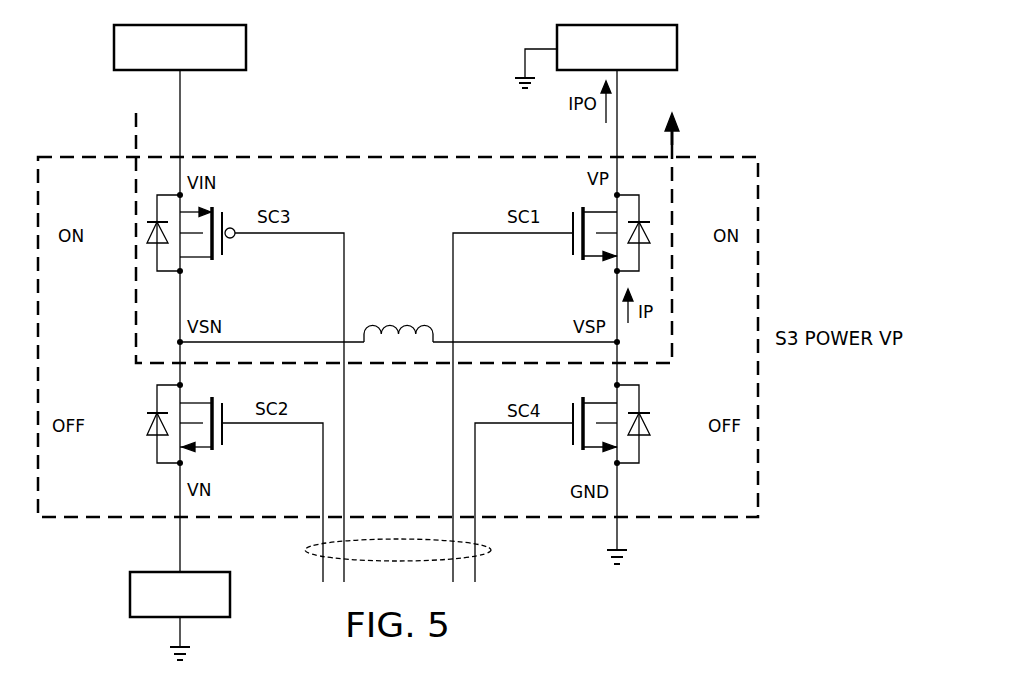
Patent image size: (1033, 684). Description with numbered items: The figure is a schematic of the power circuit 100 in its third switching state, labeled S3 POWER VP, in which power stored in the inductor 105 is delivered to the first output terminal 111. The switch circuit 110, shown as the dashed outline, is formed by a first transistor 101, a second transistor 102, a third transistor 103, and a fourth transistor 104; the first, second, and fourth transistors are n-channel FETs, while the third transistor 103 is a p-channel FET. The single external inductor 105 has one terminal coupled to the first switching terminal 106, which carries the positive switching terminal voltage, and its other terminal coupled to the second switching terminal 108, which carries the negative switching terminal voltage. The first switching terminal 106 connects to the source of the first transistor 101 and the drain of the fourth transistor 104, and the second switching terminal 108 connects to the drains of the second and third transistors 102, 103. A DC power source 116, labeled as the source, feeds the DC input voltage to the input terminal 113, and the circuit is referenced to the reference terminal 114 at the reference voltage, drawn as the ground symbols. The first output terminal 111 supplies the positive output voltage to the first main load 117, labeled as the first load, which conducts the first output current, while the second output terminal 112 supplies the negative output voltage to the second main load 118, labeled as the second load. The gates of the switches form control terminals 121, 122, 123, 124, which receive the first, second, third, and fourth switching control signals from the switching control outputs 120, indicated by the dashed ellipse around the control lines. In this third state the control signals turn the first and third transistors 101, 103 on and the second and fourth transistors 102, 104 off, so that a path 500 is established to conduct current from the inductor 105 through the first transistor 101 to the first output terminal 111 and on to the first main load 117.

The power circuit 100 is at (826, 250).
The first transistor 101 is at (573, 245).
The second transistor 102 is at (222, 437).
The third transistor 103 is at (222, 245).
The fourth transistor 104 is at (573, 437).
The inductor 105 is at (392, 324).
The first switching terminal 106 is at (617, 298).
The second switching terminal 108 is at (180, 300).
The switch circuit 110 is at (386, 150).
The first output terminal 111 is at (617, 103).
The second output terminal 112 is at (180, 540).
The input terminal 113 is at (180, 119).
The reference terminal 114 is at (525, 63).
The DC power source 116 is at (114, 49).
The first main load 117 is at (677, 36).
The second main load 118 is at (130, 592).
The switching control outputs 120 is at (492, 550).
The control terminal of first switch 121 is at (453, 283).
The control terminal of second switch 122 is at (323, 475).
The control terminal of third switch 123 is at (344, 283).
The control terminal of fourth switch 124 is at (475, 473).
The path 500 is at (136, 303).